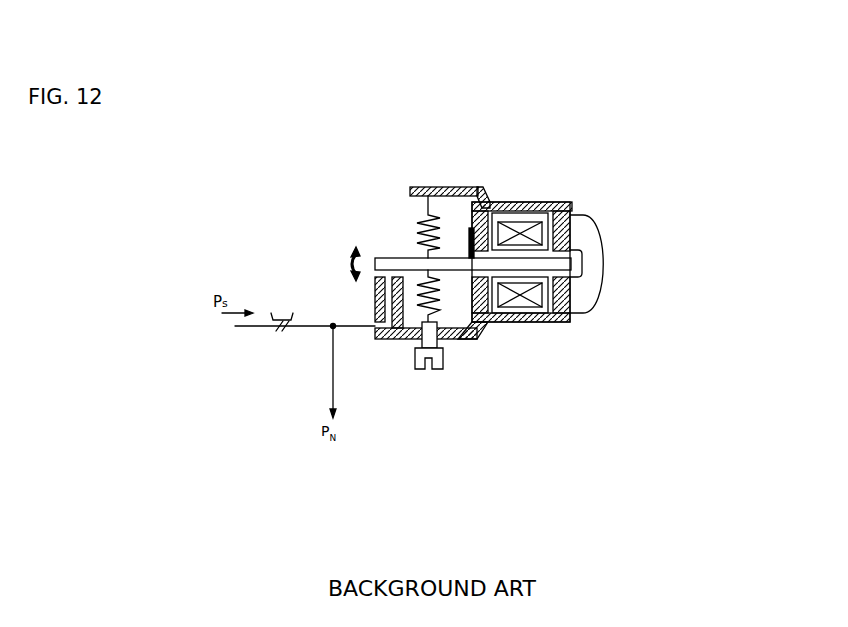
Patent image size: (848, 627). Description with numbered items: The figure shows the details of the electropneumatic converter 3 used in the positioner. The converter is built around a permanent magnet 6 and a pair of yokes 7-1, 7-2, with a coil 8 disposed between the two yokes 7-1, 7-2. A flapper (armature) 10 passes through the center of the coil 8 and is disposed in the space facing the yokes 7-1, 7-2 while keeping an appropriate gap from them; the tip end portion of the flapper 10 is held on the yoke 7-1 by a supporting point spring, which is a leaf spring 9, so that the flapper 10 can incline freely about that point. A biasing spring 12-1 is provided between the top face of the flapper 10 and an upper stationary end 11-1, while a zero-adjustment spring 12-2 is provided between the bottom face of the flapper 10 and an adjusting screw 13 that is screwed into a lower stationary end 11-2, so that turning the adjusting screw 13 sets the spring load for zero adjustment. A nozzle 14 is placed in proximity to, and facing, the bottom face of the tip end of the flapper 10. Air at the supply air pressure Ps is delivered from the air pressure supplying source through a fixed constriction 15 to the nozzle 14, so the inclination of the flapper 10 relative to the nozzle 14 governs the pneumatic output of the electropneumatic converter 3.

The electropneumatic converter 3 is at (524, 181).
The permanent magnet 6 is at (603, 245).
The yoke 7-1 is at (573, 205).
The yoke 7-2 is at (557, 325).
The coil 8 is at (534, 213).
The supporting point spring (leaf spring) 9 is at (469, 229).
The flapper (armature) 10 is at (374, 258).
The upper stationary end 11-1 is at (431, 187).
The lower stationary end 11-2 is at (395, 340).
The spring (for biasing) 12-1 is at (412, 218).
The spring (for zero adjustment) 12-2 is at (466, 338).
The adjusting screw 13 is at (443, 360).
The nozzle 14 is at (374, 287).
The fixed constriction 15 is at (286, 312).